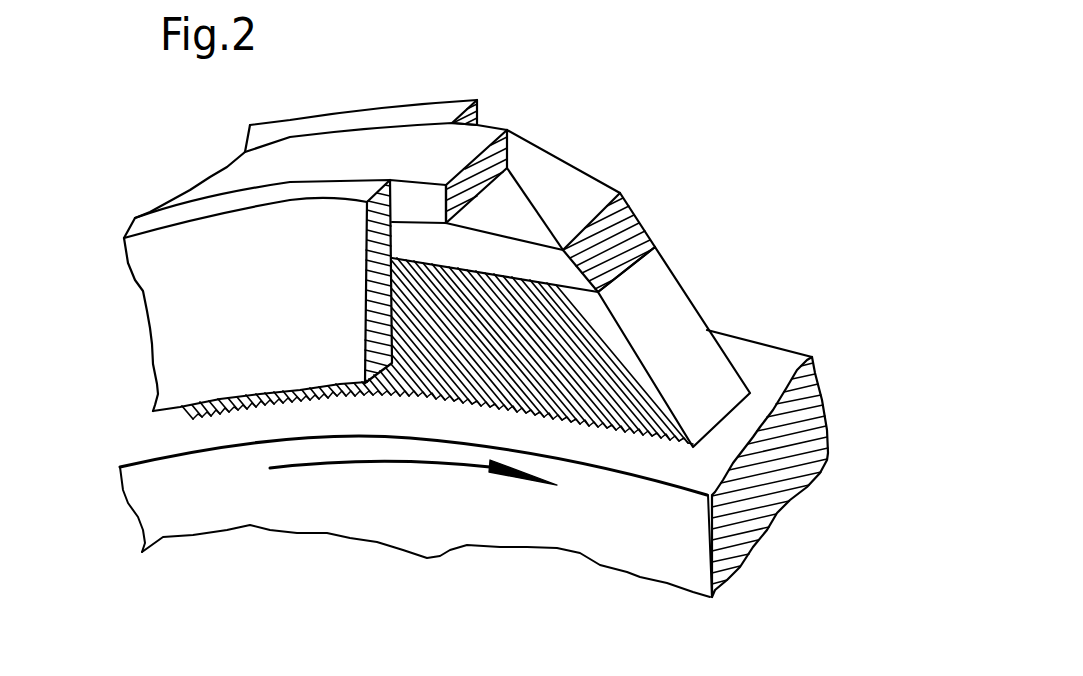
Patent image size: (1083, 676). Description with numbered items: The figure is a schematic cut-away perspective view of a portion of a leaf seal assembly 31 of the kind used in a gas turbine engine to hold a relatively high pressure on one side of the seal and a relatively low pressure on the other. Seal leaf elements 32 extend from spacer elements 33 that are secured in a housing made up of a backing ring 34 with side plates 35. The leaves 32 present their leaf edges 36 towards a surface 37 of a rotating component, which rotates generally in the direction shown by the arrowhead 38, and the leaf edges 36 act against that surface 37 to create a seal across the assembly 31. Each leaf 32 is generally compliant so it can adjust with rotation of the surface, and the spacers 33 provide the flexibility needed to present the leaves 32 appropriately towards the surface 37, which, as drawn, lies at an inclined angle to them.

The leaf seal assembly 31 is at (536, 140).
The seal leaf elements 32 is at (663, 291).
The spacer elements 33 is at (610, 191).
The backing ring 34 is at (243, 171).
The side plates 35 is at (355, 118).
The leaf edges 36 is at (731, 410).
The surface 37 is at (600, 447).
The arrowhead 38 is at (397, 467).